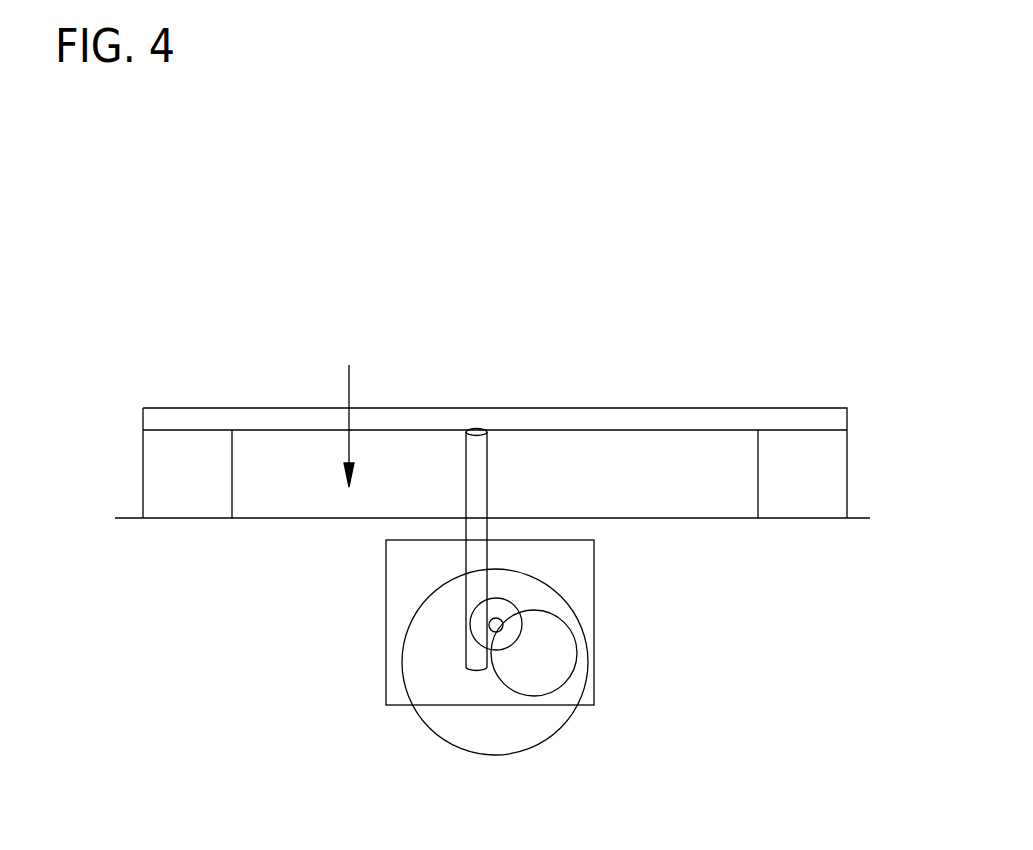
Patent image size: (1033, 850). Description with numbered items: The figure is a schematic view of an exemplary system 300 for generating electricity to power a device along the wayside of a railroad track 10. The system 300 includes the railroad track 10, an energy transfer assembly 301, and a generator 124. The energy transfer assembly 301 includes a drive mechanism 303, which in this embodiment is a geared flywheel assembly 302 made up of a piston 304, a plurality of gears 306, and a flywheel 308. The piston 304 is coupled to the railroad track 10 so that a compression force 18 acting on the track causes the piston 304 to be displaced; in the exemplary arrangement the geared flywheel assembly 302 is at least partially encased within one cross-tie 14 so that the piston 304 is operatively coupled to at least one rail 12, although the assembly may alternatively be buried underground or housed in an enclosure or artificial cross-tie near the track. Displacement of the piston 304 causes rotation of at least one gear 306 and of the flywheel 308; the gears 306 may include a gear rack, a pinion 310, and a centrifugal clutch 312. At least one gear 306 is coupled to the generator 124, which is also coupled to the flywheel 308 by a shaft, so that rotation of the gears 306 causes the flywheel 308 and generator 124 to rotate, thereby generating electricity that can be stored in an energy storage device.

The railroad track 10 is at (216, 380).
The rail 12 is at (590, 408).
The cross-tie 14 is at (758, 463).
The compression force 18 is at (349, 375).
The generator 124 is at (386, 672).
The system 300 is at (692, 225).
The energy transfer assembly 301 is at (355, 565).
The geared flywheel assembly 302 is at (392, 648).
The drive mechanism 303 is at (510, 556).
The piston 304 is at (490, 457).
The gear 306 is at (545, 598).
The flywheel 308 is at (587, 652).
The pinion 310 is at (499, 645).
The centrifugal clutch 312 is at (520, 612).